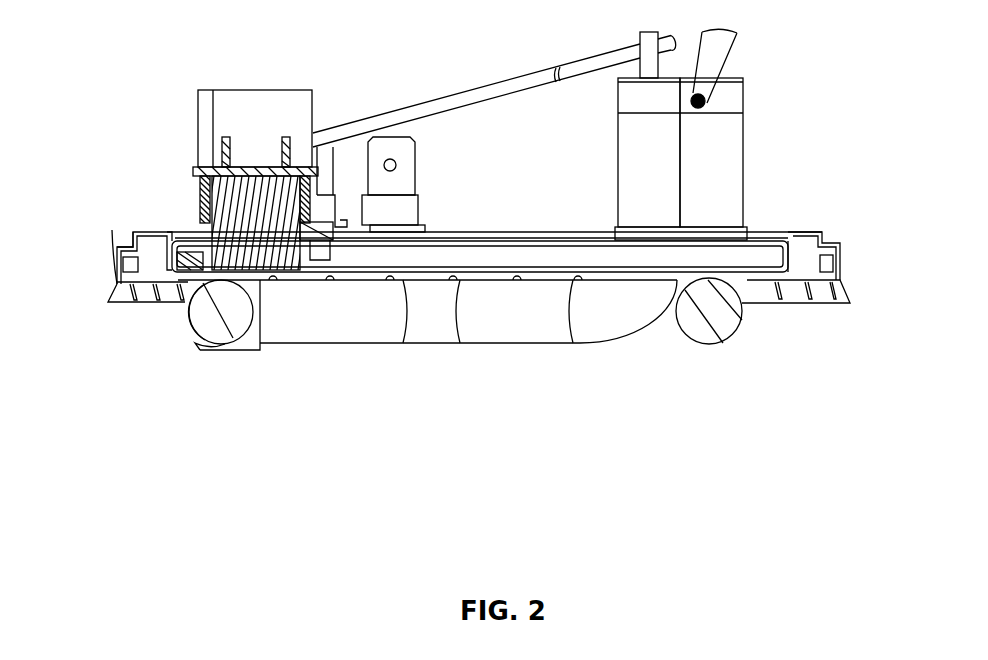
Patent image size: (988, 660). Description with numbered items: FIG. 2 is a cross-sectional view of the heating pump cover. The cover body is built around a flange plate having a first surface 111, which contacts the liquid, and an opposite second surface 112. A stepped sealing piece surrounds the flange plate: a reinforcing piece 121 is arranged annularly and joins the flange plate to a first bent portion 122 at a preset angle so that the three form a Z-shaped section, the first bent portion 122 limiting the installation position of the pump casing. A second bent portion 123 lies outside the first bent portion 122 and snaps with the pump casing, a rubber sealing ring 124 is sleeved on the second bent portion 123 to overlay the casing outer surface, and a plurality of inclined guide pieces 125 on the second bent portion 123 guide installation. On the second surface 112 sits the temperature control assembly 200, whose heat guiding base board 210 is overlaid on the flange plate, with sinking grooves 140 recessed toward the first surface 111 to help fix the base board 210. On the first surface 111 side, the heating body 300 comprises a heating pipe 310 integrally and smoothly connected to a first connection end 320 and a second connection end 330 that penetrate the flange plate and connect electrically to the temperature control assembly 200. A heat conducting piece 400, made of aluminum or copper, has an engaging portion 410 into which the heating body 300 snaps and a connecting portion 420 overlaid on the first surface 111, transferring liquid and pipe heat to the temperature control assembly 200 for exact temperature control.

The first surface 111 is at (760, 303).
The second surface 112 is at (763, 237).
The reinforcing piece 121 is at (157, 278).
The first bent portion 122 is at (157, 235).
The second bent portion 123 is at (123, 243).
The sealing ring 124 is at (128, 265).
The guide piece 125 is at (112, 288).
The sinking groove 140 is at (262, 285).
The temperature control assembly 200 is at (255, 97).
The base board 210 is at (183, 258).
The heating body 300 is at (501, 370).
The heating pipe 310 is at (428, 330).
The first connection end 320 is at (640, 300).
The second connection end 330 is at (709, 351).
The heat conducting piece 400 is at (183, 357).
The engaging portion 410 is at (233, 343).
The connecting portion 420 is at (173, 253).